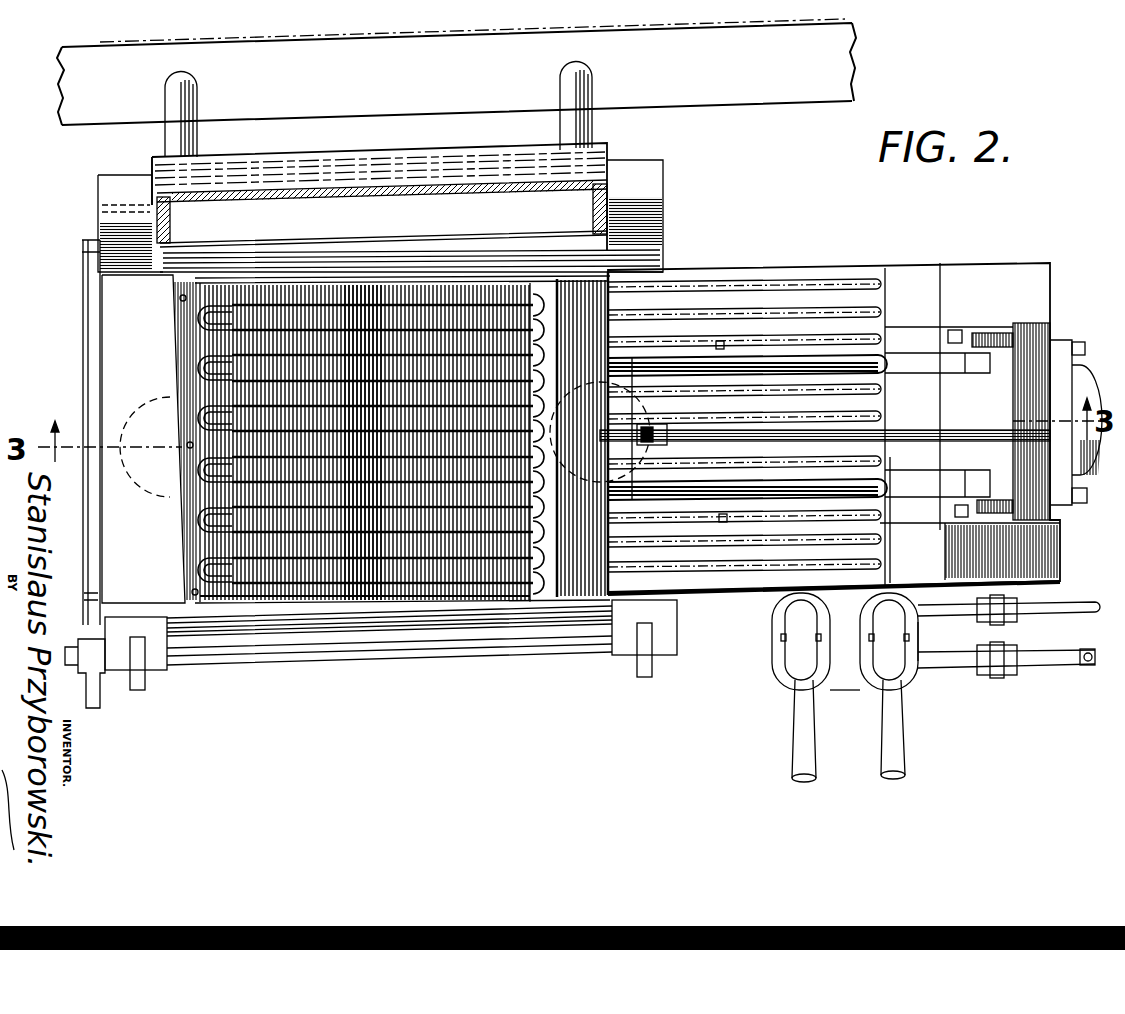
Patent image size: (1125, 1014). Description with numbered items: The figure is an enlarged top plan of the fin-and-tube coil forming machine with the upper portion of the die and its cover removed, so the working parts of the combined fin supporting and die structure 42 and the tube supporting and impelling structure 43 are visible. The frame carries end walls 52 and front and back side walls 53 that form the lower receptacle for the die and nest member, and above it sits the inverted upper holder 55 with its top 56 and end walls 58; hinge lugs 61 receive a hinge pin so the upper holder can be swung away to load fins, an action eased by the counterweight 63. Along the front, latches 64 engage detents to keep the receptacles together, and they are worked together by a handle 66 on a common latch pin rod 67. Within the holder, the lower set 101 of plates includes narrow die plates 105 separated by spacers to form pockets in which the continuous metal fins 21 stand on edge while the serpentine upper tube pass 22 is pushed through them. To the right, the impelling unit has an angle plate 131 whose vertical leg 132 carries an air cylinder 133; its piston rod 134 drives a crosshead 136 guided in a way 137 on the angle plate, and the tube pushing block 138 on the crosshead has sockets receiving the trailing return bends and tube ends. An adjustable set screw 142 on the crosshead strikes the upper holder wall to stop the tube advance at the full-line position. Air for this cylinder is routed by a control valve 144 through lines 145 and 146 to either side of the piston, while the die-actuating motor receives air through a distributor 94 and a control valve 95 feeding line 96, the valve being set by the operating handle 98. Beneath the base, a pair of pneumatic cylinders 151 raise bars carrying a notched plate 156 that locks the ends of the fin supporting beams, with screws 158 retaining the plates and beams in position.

The fins 21 is at (200, 393).
The upper tube pass 22 is at (200, 365).
The combined fin supporting and die structure 42 is at (345, 270).
The tube supporting and impelling structure 43 is at (760, 358).
The end walls 52 is at (178, 534).
The front and back side walls 53 is at (314, 600).
The upper holder 55 is at (458, 178).
The top 56 is at (312, 188).
The end walls of upper holder 58 is at (592, 213).
The hinge lugs 61 is at (697, 178).
The counterweight 63 is at (717, 93).
The latches 64 is at (641, 672).
The handle 66 is at (100, 708).
The latch pin rod 67 is at (212, 660).
The distributor 94 is at (845, 633).
The control valve 95 is at (780, 663).
The air line 96 is at (1090, 666).
The valve operating handle 98 is at (800, 712).
The lower set of plates 101 is at (435, 595).
The die plates 105 is at (374, 590).
The angle plate 131 is at (900, 340).
The vertical leg 132 is at (1037, 330).
The air cylinder 133 is at (1083, 373).
The piston rod 134 is at (913, 422).
The crosshead 136 is at (648, 405).
The way 137 is at (942, 490).
The tube pushing block 138 is at (580, 585).
The adjustable set screw 142 is at (655, 440).
The control valve 144 is at (913, 680).
The air line 145 is at (935, 618).
The air line 146 is at (1043, 662).
The pneumatic cylinders 151 is at (158, 473).
The plate 156 is at (186, 328).
The screws 158 is at (180, 298).